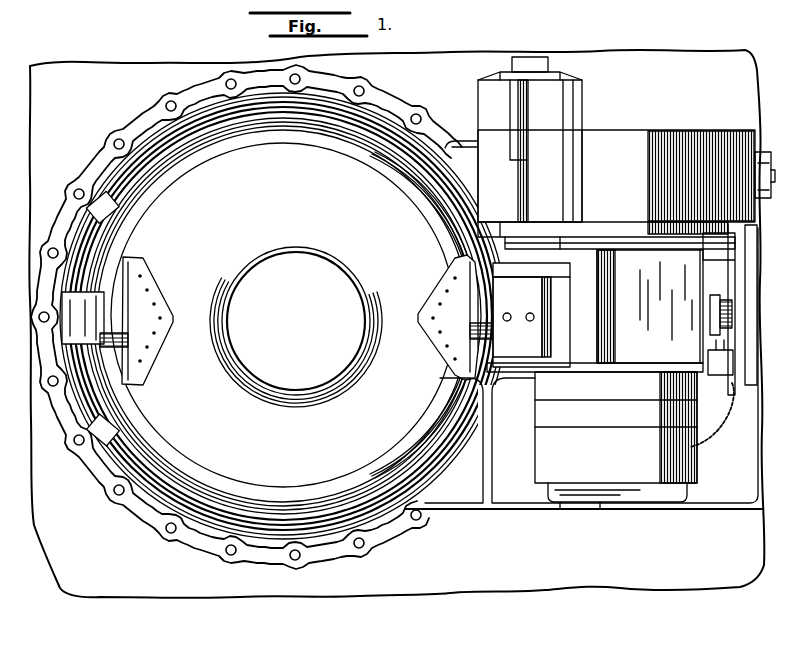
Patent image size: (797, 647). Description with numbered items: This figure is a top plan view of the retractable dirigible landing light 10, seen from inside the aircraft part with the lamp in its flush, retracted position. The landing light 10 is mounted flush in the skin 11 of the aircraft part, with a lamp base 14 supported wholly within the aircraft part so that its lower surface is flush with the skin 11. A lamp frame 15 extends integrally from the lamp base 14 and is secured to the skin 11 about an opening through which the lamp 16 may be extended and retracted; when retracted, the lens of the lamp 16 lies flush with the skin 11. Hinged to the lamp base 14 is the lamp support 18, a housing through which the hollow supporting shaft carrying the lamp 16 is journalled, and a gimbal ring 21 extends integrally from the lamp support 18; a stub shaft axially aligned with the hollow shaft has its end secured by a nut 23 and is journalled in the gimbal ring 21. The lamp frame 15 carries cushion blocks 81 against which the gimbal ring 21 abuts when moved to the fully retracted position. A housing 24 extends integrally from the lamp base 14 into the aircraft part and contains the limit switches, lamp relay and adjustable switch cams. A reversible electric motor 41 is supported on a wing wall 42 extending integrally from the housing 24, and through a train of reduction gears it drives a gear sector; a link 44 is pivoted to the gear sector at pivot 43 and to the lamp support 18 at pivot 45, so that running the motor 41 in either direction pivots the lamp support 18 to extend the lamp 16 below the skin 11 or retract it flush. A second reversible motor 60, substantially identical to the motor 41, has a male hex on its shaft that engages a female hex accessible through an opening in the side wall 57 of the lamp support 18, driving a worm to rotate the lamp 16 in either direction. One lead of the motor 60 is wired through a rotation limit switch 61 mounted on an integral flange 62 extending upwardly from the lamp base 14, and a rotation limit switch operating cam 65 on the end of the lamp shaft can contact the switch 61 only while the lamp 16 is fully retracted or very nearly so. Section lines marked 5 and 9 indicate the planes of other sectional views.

The landing light 10 is at (501, 606).
The skin 11 is at (645, 575).
The lamp base 14 is at (510, 507).
The lamp frame 15 is at (401, 558).
The lamp 16 is at (268, 450).
The lamp support 18 is at (559, 283).
The gimbal ring 21 is at (222, 508).
The nut 23 is at (70, 318).
The housing 24 is at (700, 143).
The reversible electric motor 41 is at (570, 116).
The wing wall 42 is at (560, 215).
The pivot 43 is at (742, 272).
The link 44 is at (637, 247).
The pivot 45 is at (590, 240).
The side wall 57 is at (637, 367).
The motor 60 is at (690, 467).
The rotation limit switch 61 is at (720, 378).
The flange 62 is at (740, 410).
The rotation limit switch operating cam 65 is at (720, 307).
The cushion blocks 81 is at (89, 193).
The section line 5- 5 is at (398, 303).
The section line 9- 9 is at (600, 187).